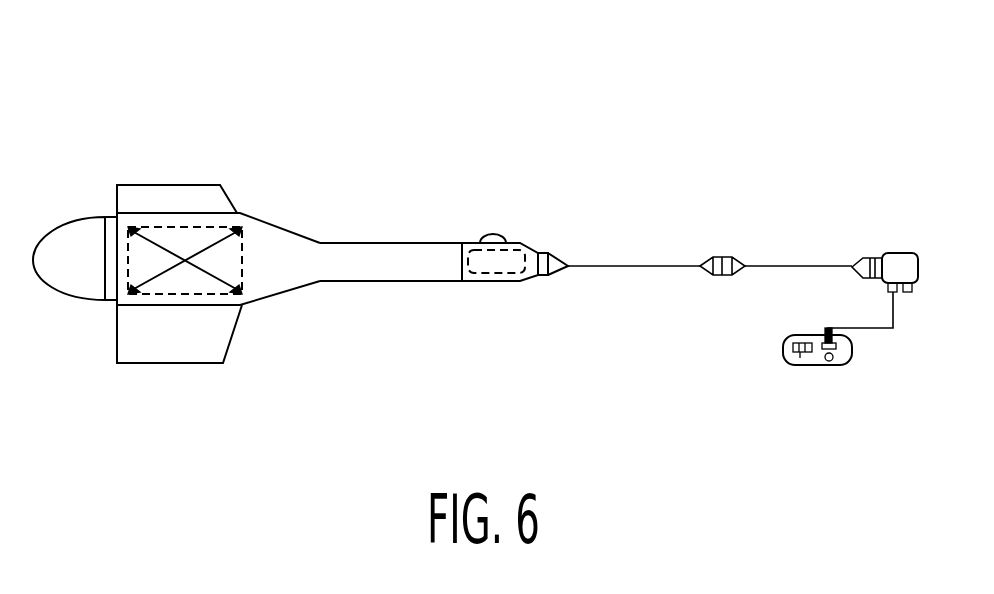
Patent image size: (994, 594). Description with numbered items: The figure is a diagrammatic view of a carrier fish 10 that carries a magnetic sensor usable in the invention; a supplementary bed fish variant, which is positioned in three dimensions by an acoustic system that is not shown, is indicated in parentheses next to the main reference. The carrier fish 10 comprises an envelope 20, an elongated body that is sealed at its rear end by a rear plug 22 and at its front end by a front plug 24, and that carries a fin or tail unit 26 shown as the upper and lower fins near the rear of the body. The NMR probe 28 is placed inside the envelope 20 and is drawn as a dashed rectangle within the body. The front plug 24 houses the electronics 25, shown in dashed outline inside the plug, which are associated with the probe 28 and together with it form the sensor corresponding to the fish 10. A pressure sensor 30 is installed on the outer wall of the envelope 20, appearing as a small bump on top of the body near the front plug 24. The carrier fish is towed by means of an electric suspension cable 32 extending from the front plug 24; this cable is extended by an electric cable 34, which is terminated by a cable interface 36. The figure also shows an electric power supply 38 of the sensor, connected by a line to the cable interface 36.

The carrier fish 10 is at (157, 140).
The envelope 20 is at (377, 283).
The rear plug 22 is at (74, 232).
The front plug 24 is at (493, 283).
The electronics 25 is at (467, 283).
The fin or tail unit 26 is at (128, 340).
The NMR probe 28 is at (242, 250).
The pressure sensor 30 is at (488, 235).
The electric suspension cable 32 is at (615, 262).
The electric cable 34 is at (775, 262).
The cable interface 36 is at (905, 256).
The electric power supply 38 is at (851, 352).